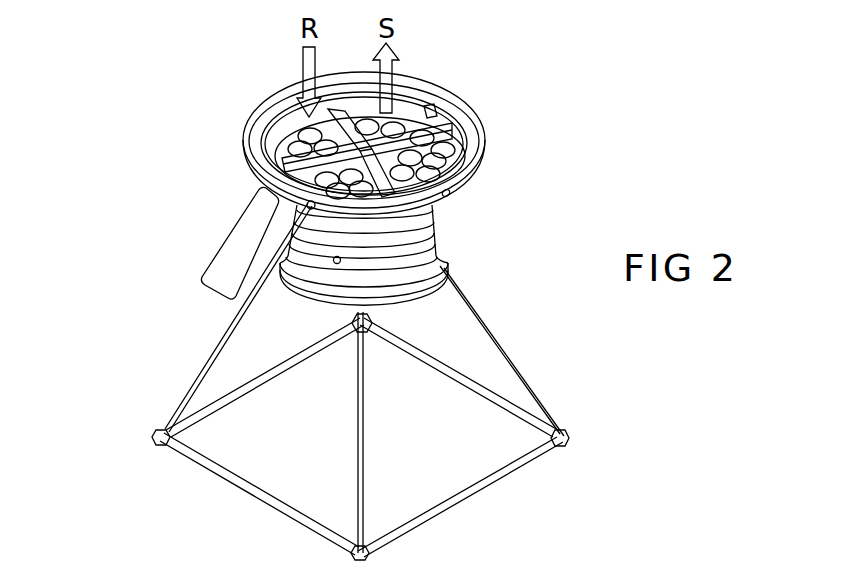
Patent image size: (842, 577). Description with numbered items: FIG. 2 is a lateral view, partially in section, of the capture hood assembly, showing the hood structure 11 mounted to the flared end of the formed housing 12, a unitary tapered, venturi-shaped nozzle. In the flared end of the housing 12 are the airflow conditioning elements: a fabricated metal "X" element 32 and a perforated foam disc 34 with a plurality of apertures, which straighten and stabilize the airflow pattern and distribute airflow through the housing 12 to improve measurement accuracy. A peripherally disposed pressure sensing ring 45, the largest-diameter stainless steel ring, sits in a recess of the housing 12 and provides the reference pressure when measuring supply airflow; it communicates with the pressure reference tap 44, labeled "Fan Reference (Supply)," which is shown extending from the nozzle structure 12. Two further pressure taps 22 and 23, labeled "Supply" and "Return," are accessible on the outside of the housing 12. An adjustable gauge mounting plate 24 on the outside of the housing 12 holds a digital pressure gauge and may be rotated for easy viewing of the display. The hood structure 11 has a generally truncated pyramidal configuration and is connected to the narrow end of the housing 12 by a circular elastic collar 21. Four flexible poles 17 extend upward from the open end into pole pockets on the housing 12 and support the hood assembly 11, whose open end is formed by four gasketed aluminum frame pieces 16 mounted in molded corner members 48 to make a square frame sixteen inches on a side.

The hood structure 11 is at (356, 381).
The formed housing 12 is at (448, 213).
The frame pieces 16 is at (516, 471).
The flexible poles 17 is at (198, 378).
The elastic collar 21 is at (448, 262).
The pressure tap 22 is at (308, 208).
The pressure tap 23 is at (334, 262).
The gauge mounting plate 24 is at (218, 226).
The "X" element 32 is at (433, 137).
The perforated foam disc 34 is at (283, 151).
The pressure reference tap 44 is at (448, 193).
The pressure sensing ring 45 is at (278, 112).
The molded corner members 48 is at (155, 436).